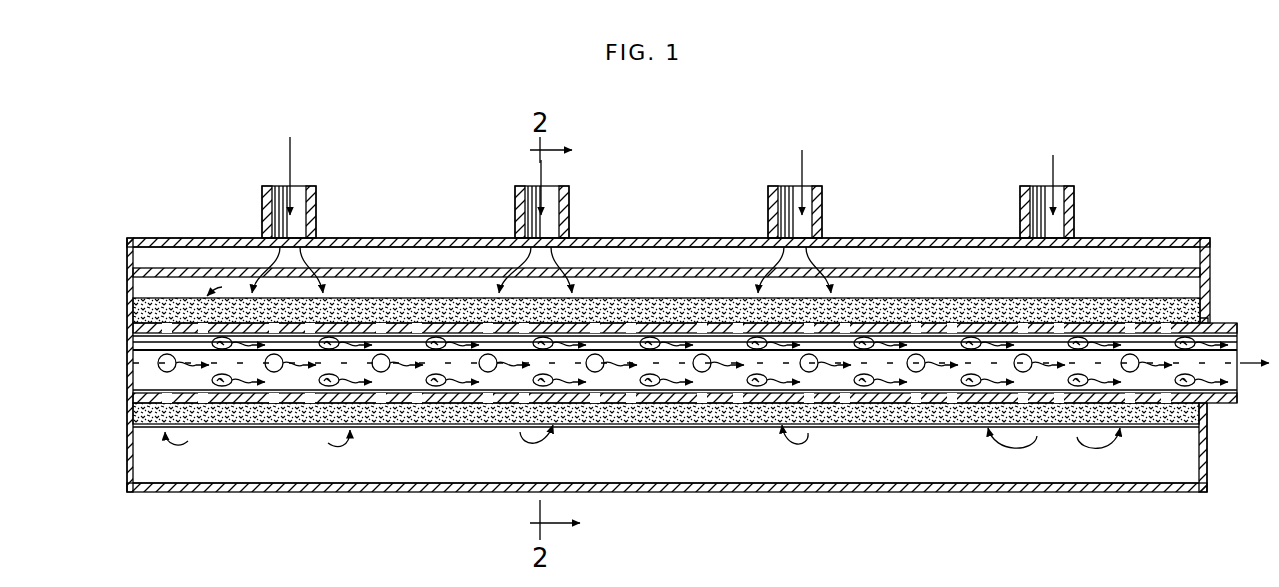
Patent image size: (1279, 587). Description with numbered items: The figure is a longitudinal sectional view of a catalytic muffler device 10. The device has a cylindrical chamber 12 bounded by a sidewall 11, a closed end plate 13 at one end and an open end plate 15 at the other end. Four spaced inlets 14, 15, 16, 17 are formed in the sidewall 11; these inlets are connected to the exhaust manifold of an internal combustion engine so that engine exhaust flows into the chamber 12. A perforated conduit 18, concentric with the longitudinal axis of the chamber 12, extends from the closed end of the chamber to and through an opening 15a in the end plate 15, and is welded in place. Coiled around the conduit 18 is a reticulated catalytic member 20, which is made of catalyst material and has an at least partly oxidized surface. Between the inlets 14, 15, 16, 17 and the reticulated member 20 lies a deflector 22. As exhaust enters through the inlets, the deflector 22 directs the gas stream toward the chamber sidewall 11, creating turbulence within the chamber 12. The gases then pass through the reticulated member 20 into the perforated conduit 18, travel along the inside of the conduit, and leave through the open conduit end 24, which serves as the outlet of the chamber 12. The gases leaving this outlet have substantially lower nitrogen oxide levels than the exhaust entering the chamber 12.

The catalytic muffler device 10 is at (976, 494).
The sidewall 11 is at (725, 250).
The cylindrical chamber 12 is at (676, 240).
The closed end plate 13 is at (128, 445).
The inlet 14 is at (297, 194).
The open end plate 15 is at (548, 190).
The opening 15a is at (1208, 318).
The inlet 16 is at (804, 195).
The inlet 17 is at (1020, 200).
The perforated conduit 18 is at (835, 411).
The reticulated catalytic member 20 is at (415, 411).
The deflector 22 is at (613, 270).
The open conduit end 24 is at (1240, 336).